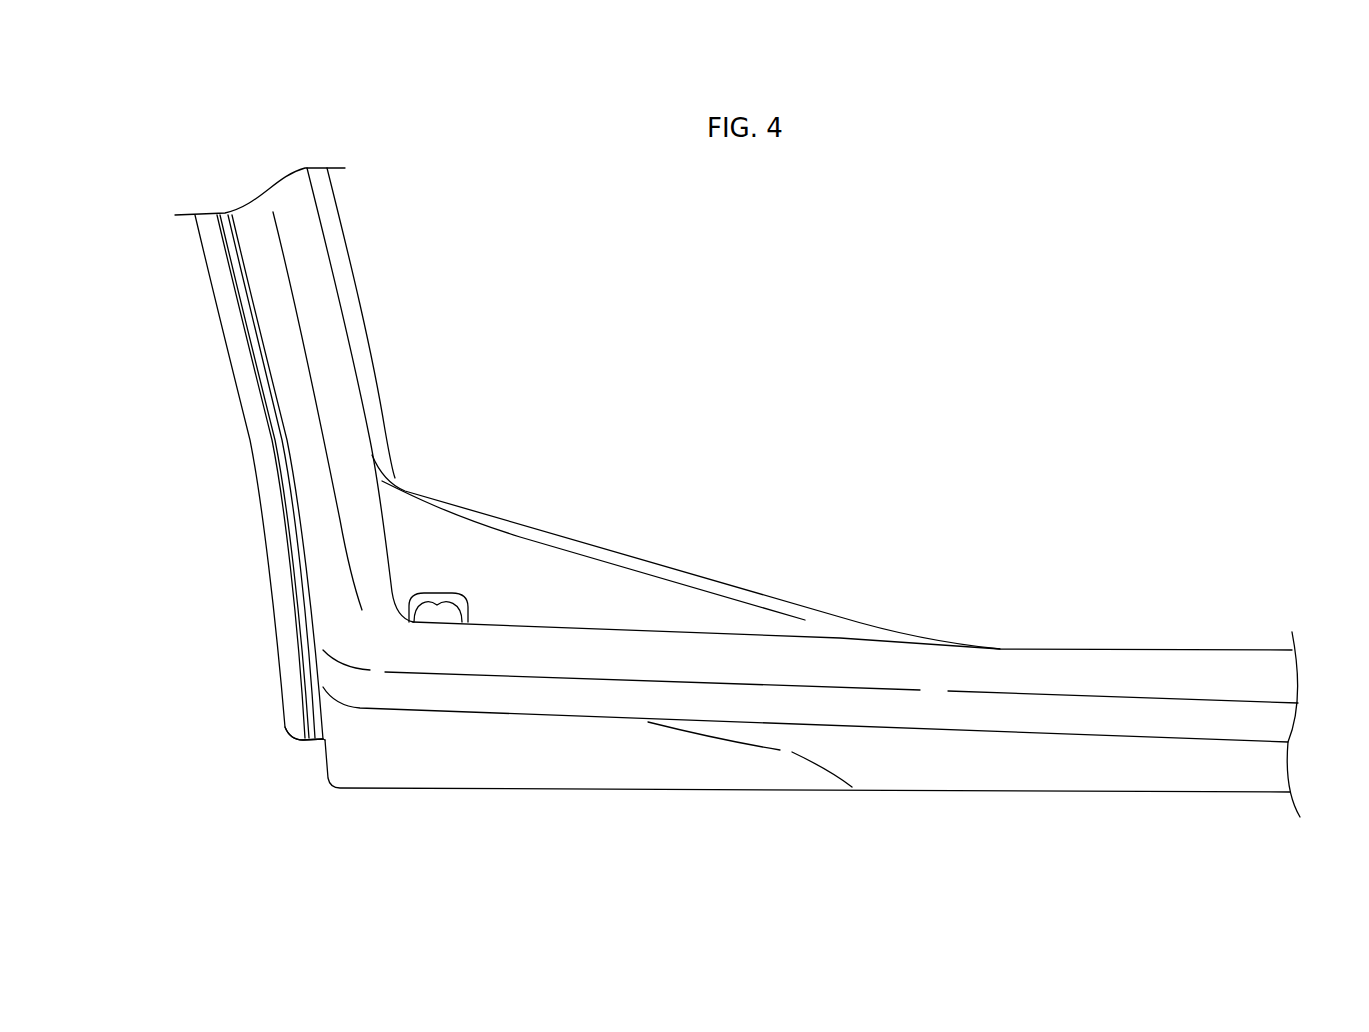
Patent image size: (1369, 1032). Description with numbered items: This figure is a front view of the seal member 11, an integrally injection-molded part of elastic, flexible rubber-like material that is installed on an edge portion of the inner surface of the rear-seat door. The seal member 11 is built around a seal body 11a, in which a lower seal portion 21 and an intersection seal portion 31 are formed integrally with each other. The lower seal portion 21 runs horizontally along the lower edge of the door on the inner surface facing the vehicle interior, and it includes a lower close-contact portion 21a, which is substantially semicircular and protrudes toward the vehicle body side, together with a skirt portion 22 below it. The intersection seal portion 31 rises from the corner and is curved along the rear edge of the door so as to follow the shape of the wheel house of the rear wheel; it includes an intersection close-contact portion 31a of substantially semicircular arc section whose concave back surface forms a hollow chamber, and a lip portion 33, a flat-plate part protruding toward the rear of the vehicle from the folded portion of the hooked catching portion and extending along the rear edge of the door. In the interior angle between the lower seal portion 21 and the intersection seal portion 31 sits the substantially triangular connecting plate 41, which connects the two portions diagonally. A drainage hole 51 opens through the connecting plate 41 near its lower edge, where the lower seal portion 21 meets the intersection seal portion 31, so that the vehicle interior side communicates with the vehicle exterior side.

The seal member 11 is at (774, 430).
The seal body 11a is at (310, 746).
The lower seal portion 21 is at (1078, 650).
The lower close-contact portion 21a is at (963, 716).
The skirt portion 22 is at (700, 762).
The intersection seal portion 31 is at (365, 318).
The intersection close-contact portion 31a is at (332, 370).
The lip portion 33 is at (257, 434).
The connecting plate 41 is at (597, 583).
The drainage hole 51 is at (423, 598).